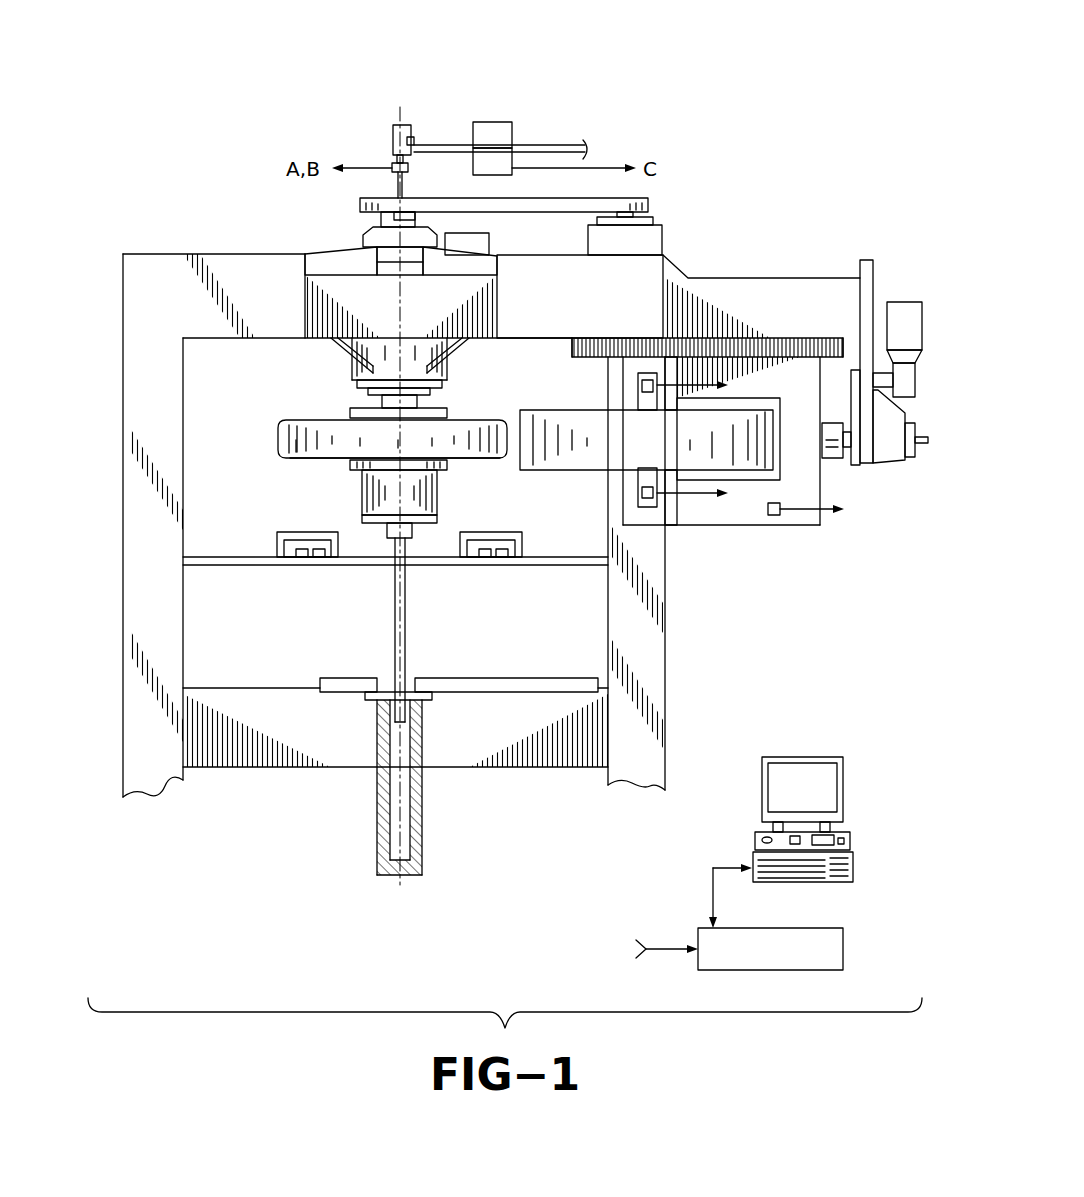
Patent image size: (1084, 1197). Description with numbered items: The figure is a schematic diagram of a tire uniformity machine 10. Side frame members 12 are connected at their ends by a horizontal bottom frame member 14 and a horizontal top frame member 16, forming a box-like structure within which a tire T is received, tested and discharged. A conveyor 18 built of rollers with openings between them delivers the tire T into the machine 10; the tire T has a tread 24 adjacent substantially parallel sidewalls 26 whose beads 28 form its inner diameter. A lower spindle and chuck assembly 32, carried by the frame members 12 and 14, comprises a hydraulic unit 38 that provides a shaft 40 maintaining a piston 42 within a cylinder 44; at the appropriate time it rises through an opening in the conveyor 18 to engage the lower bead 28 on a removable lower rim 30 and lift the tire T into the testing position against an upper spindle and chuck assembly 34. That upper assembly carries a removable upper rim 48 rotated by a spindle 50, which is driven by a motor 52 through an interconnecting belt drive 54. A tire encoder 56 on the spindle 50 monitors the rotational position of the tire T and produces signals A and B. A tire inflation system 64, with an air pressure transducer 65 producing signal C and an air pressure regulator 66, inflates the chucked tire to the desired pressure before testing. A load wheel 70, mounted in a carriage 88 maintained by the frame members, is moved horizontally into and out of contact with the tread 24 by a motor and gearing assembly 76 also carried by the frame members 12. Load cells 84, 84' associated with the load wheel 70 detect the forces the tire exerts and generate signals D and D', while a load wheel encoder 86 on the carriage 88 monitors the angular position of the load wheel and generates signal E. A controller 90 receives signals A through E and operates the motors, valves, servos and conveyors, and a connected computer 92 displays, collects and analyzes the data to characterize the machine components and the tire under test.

The tire uniformity machine 10 is at (698, 96).
The side frame members 12 is at (150, 387).
The horizontal bottom frame member 14 is at (250, 757).
The horizontal top frame member 16 is at (232, 270).
The conveyor 18 is at (205, 570).
The tread 24 is at (280, 437).
The tire T is at (298, 450).
The sidewalls 26 is at (305, 466).
The beads 28 is at (331, 462).
The lower rim 30 is at (440, 470).
The lower spindle and chuck assembly 32 is at (370, 546).
The upper spindle and chuck assembly 34 is at (328, 347).
The hydraulic unit 38 is at (420, 668).
The shaft 40 is at (407, 610).
The piston 42 is at (382, 403).
The cylinder 44 is at (420, 802).
The upper rim 48 is at (446, 410).
The spindle 50 is at (378, 222).
The motor 52 is at (643, 249).
The belt drive 54 is at (650, 204).
The tire encoder 56 is at (396, 166).
The tire inflation system 64 is at (515, 102).
The air pressure transducer 65 is at (487, 124).
The air pressure regulator 66 is at (487, 174).
The load wheel 70 is at (576, 482).
The motor and gearing assembly 76 is at (835, 458).
The load cell 84 is at (646, 386).
The load cell 84' is at (695, 514).
The load wheel encoder 86 is at (773, 517).
The carriage 88 is at (805, 528).
The controller 90 is at (845, 950).
The computer 92 is at (855, 868).